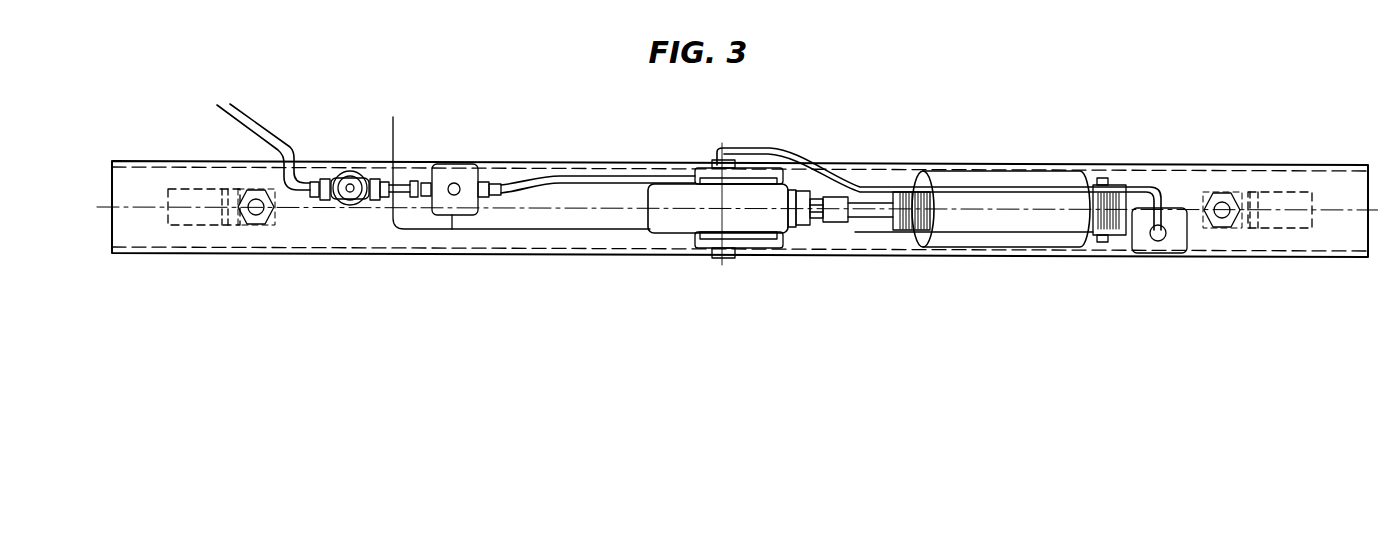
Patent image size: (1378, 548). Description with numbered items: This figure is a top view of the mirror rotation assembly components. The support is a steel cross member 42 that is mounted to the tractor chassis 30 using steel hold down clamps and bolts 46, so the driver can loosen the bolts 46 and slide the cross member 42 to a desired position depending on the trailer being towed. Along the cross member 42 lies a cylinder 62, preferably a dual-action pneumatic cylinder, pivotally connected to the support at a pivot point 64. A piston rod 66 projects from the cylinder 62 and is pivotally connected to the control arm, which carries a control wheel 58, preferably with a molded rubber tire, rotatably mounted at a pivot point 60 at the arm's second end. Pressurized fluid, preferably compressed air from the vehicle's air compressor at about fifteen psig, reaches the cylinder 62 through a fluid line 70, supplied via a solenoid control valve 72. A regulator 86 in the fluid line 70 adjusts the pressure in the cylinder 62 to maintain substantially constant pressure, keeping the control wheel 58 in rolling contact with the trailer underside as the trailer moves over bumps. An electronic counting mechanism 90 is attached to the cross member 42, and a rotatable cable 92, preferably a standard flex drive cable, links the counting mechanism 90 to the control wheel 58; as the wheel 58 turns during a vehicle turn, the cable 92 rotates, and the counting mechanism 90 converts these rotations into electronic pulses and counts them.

The chassis 30 is at (303, 232).
The cross member 42 is at (364, 250).
The bolts 46 is at (258, 226).
The control wheel 58 is at (670, 218).
The pivot point 60 is at (722, 262).
The cylinder 62 is at (1002, 233).
The pivot point 64 is at (1097, 248).
The piston rod 66 is at (877, 215).
The fluid line 70 is at (617, 175).
The solenoid control valve 72 is at (478, 164).
The regulator 86 is at (346, 173).
The electronic counting mechanism 90 is at (1172, 206).
The rotatable cable 92 is at (803, 155).